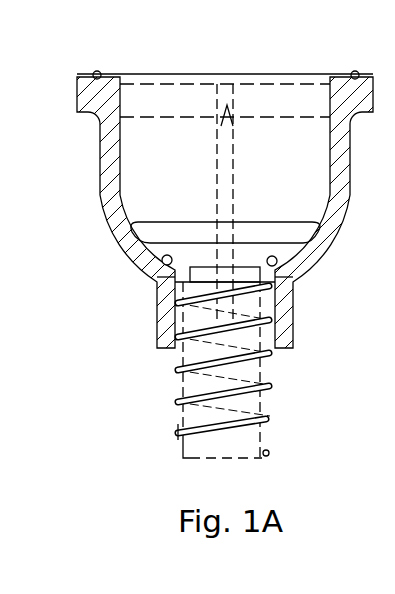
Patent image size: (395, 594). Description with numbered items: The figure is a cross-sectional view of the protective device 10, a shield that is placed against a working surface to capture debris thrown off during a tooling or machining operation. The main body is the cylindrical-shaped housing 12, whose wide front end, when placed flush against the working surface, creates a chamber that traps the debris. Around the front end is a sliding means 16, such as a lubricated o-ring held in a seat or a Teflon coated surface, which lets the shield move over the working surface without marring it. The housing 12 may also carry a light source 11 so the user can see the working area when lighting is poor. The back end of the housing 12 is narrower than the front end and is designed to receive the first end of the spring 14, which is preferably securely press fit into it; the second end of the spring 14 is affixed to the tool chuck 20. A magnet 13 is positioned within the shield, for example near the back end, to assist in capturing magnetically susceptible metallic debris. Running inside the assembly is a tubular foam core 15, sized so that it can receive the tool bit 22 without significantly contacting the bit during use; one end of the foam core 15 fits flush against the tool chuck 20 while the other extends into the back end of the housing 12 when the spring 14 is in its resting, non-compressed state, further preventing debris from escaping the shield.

The protective device 10 is at (150, 274).
The light source 11 is at (162, 268).
The cylindrical-shaped housing 12 is at (107, 223).
The magnet 13 is at (160, 230).
The spring 14 is at (267, 420).
The foam core 15 is at (270, 375).
The sliding means 16 is at (93, 72).
The tool chuck 20 is at (182, 417).
The tool bit 22 is at (235, 161).